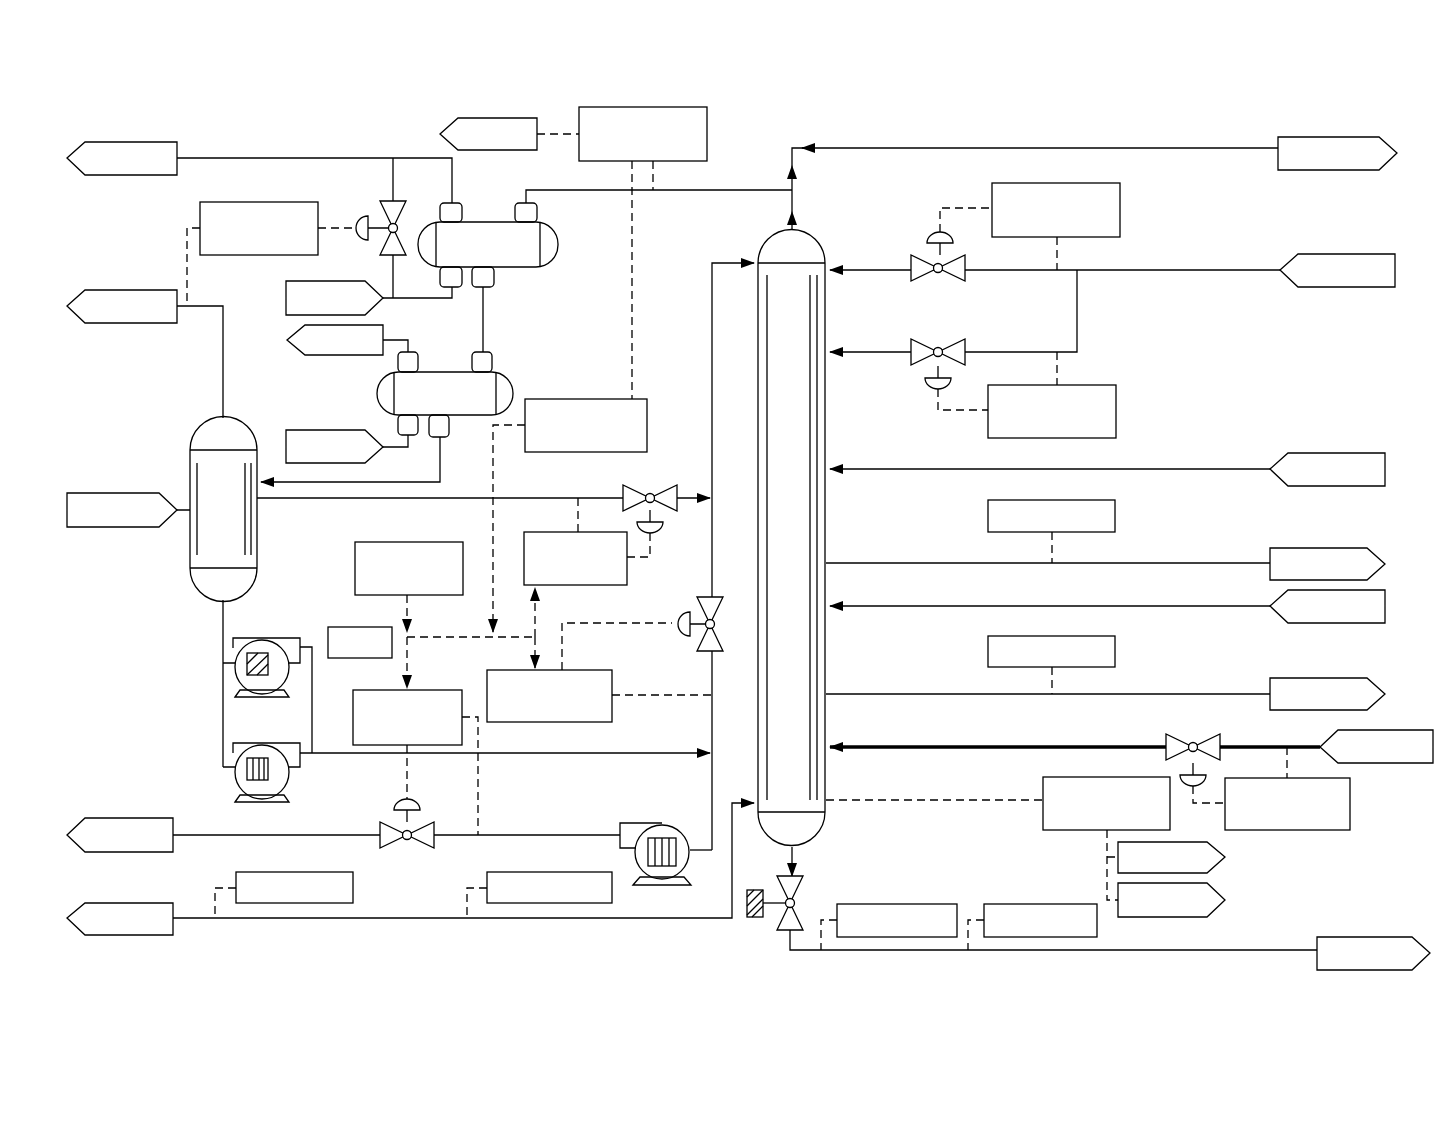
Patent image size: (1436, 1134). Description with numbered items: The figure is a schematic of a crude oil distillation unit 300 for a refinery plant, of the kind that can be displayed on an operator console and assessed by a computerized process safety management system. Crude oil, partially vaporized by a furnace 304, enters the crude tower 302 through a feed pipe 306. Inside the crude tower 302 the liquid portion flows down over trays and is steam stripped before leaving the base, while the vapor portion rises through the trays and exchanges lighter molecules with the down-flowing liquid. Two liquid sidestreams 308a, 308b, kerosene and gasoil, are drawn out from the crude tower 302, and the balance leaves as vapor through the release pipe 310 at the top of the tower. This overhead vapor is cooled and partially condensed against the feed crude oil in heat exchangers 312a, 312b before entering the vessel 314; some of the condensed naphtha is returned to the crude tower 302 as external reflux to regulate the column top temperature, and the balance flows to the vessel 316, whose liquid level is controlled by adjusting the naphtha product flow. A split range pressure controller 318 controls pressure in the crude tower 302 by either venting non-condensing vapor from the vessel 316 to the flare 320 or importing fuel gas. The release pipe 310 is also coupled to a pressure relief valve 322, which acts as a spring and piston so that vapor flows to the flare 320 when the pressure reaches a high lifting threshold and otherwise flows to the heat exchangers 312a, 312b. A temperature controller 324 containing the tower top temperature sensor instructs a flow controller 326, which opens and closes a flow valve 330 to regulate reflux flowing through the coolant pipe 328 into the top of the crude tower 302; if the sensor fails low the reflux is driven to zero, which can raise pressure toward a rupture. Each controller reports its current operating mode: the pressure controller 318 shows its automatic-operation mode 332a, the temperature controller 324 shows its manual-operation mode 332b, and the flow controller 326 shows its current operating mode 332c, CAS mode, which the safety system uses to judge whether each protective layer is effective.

The crude oil distillation unit 300 is at (273, 133).
The crude tower 302 is at (826, 517).
The furnace 304 is at (122, 904).
The feed pipe 306 is at (200, 917).
The liquid sidestream 308a is at (931, 693).
The liquid sidestream 308b is at (931, 562).
The release pipe 310 is at (798, 230).
The heat exchanger 312a is at (503, 268).
The heat exchanger 312b is at (377, 390).
The vessel 314 is at (188, 453).
The vessel 316 is at (448, 120).
The split range pressure controller 318 is at (580, 114).
The flare 320 is at (1330, 137).
The pressure relief valve 322 is at (792, 143).
The temperature controller 324 is at (547, 398).
The flow controller 326 is at (487, 684).
The coolant pipe 328 is at (730, 262).
The flow valve 330 is at (698, 641).
The automatic-operation mode 332a is at (712, 130).
The manual-operation mode 332b is at (652, 420).
The current operating mode 332c is at (618, 710).